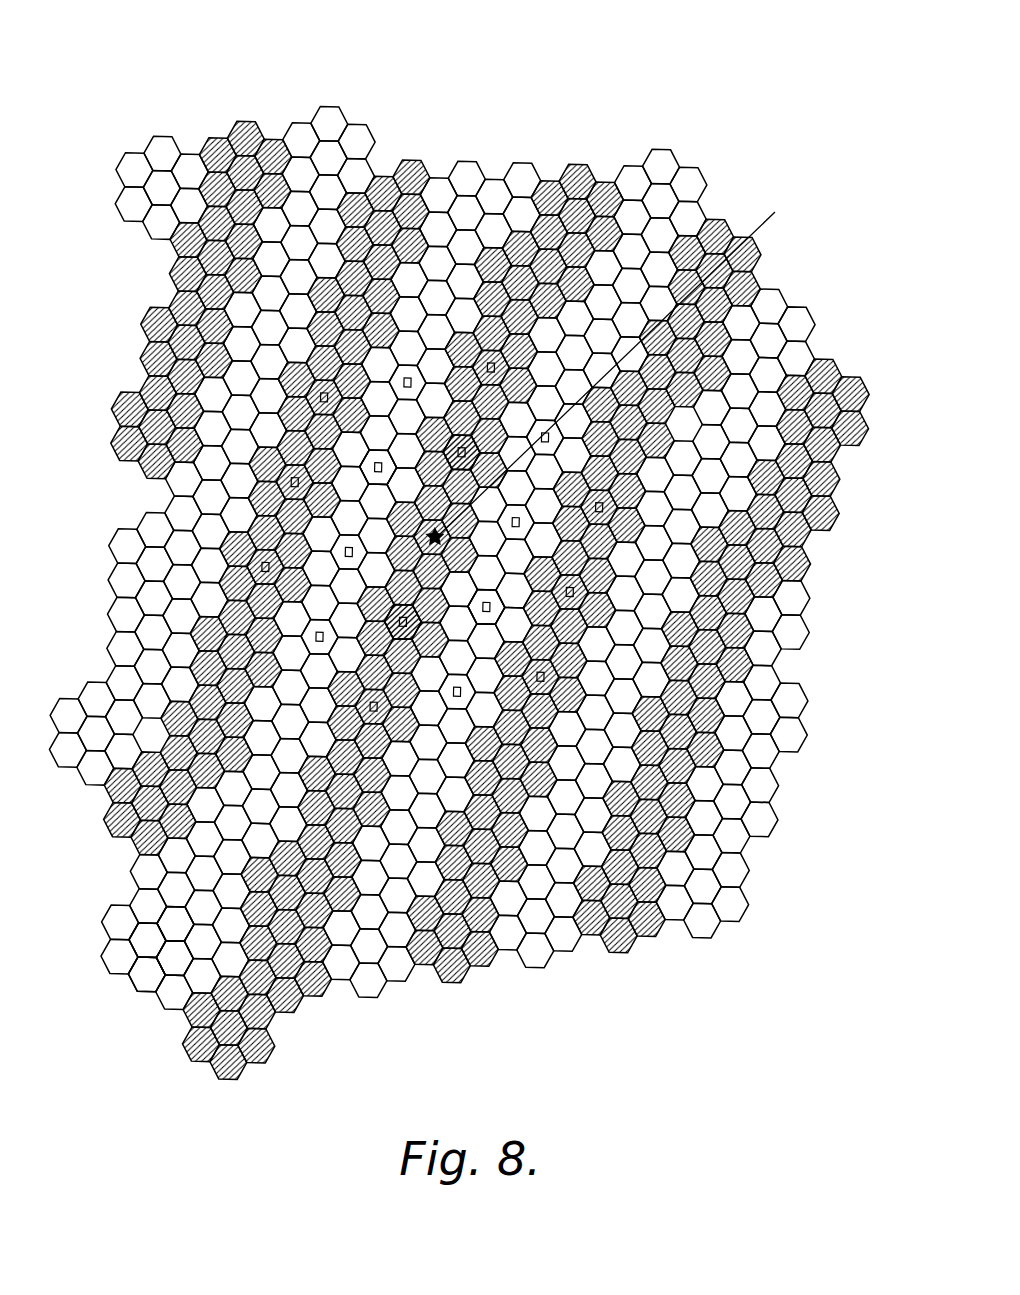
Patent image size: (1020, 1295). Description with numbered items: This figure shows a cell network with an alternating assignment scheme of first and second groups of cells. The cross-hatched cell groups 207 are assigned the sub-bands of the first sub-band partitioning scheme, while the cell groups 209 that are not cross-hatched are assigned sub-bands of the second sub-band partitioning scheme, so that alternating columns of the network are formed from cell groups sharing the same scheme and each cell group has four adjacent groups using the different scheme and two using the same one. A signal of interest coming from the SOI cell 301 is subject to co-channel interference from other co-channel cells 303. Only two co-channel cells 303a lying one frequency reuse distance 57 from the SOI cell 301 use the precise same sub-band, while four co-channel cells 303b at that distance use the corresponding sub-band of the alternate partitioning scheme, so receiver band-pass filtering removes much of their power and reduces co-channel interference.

The frequency reuse distance 57 is at (655, 324).
The cross-hatched cell groups 207 is at (100, 413).
The cell groups that are not cross-hatched 209 is at (176, 150).
The SOI cell 301 is at (426, 540).
The co-channel cells 303 is at (786, 440).
The co-channel cells using the precise same sub-band 303a is at (92, 660).
The co-channel cells using the alternate sub-band partitioning scheme 303b is at (805, 810).